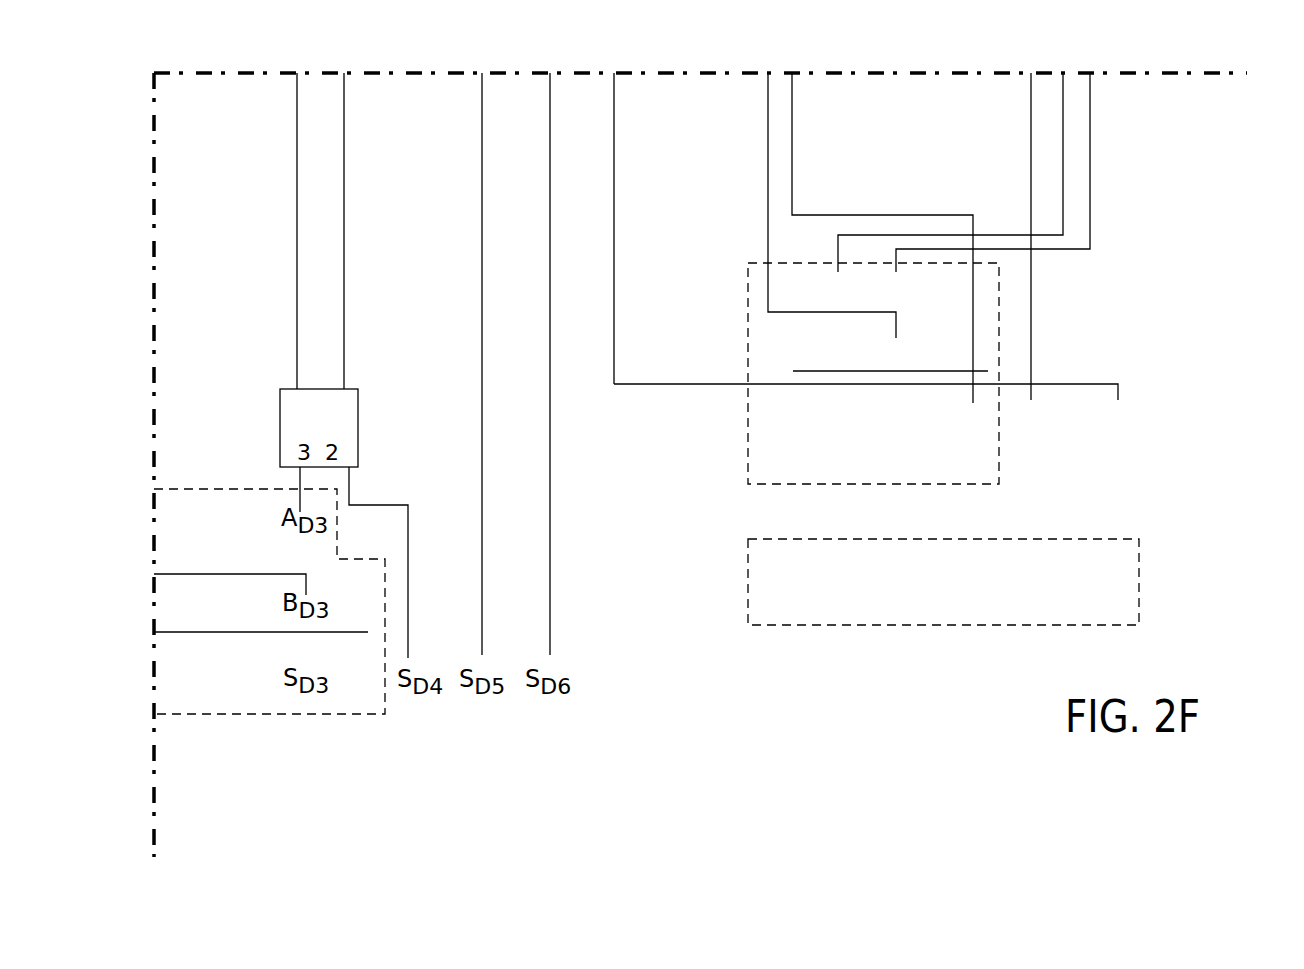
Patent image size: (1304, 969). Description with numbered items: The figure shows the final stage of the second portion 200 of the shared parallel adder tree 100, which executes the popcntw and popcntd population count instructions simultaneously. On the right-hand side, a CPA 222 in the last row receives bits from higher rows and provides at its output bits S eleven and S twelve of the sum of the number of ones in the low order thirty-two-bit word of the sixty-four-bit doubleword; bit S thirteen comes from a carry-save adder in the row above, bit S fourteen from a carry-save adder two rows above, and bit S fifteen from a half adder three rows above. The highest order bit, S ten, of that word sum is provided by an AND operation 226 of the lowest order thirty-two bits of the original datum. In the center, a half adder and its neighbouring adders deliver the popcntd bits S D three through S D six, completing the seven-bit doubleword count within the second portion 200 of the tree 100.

The shared parallel adder tree 100 is at (1239, 406).
The second portion of the shared parallel adder tree 200 is at (1177, 480).
The CPA 222 is at (748, 283).
The AND operation 226 is at (748, 559).